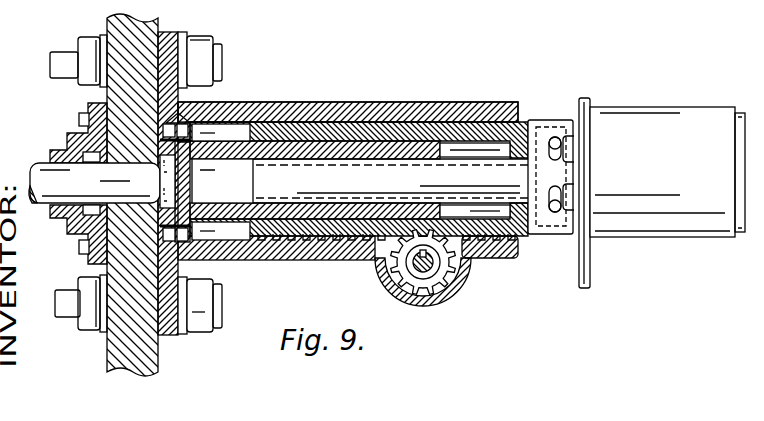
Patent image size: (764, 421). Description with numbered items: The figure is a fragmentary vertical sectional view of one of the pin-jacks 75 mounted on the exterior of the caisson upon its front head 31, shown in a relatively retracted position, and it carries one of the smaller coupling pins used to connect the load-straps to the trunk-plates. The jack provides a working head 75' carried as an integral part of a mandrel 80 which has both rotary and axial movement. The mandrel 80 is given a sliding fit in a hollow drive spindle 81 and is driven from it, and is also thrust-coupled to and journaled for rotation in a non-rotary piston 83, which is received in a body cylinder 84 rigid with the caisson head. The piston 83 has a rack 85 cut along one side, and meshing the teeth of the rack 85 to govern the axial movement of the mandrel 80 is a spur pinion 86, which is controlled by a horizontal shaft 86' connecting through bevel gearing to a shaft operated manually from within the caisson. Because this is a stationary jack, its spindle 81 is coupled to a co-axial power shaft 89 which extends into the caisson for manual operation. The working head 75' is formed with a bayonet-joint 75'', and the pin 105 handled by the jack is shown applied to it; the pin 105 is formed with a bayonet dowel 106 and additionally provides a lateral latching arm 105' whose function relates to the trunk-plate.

The front head 31 is at (107, 23).
The pin-jack 75 is at (345, 183).
The working head 75' is at (551, 161).
The bayonet-joint 75'' is at (555, 223).
The mandrel 80 is at (268, 183).
The hollow drive spindle 81 is at (248, 141).
The non-rotary piston 83 is at (463, 125).
The body cylinder 84 is at (371, 105).
The rack 85 is at (330, 238).
The spur pinion 86 is at (437, 272).
The horizontal shaft 86' is at (396, 282).
The power shaft 89 is at (44, 167).
The pin 105 is at (667, 159).
The lateral latching arm 105' is at (608, 194).
The bayonet dowel 106 is at (560, 148).